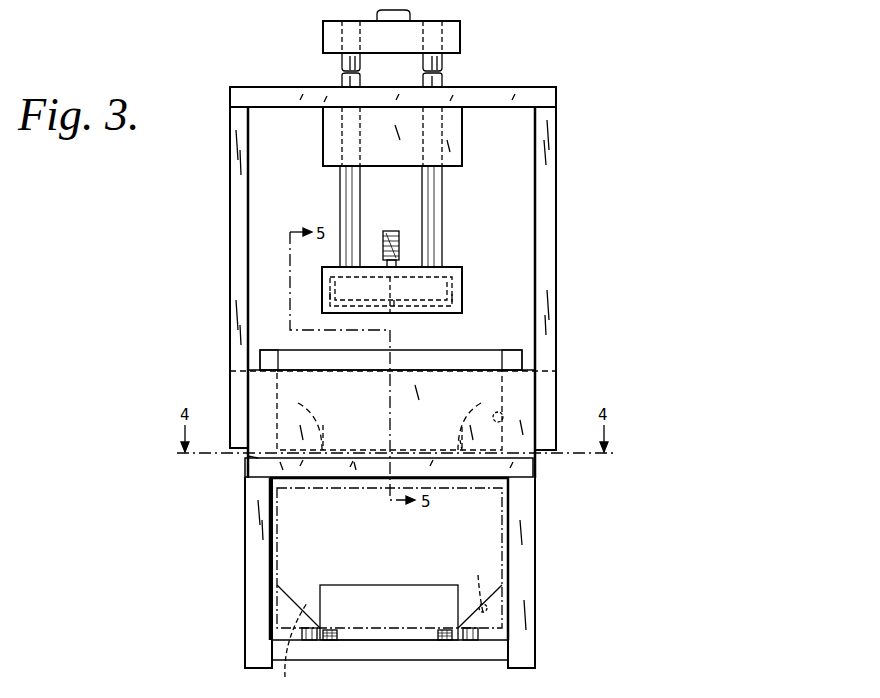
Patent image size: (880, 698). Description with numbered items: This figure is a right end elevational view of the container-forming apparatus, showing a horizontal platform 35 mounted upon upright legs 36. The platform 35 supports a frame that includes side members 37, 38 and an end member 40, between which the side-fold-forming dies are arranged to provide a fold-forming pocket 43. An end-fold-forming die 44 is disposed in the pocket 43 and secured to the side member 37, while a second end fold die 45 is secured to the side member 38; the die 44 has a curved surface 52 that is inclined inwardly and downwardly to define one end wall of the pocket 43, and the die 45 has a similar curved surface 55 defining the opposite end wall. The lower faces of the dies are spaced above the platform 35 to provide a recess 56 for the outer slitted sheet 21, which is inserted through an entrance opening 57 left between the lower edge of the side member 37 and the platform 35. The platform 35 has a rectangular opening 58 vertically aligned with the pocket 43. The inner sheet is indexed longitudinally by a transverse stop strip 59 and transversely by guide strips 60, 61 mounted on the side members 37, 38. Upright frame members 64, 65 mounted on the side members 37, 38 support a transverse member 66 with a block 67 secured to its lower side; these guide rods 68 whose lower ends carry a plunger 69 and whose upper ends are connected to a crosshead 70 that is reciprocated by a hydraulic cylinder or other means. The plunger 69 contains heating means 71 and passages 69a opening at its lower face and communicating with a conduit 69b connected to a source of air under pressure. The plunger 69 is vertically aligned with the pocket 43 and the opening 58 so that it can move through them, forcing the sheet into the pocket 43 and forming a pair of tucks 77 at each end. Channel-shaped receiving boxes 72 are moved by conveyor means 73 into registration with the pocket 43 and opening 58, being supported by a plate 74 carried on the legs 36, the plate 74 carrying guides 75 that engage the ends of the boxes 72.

The outer sheet 21 is at (495, 529).
The horizontal platform 35 is at (530, 473).
The upright legs 36 is at (265, 544).
The side member 37 is at (248, 373).
The side member 38 is at (503, 413).
The end member 40 is at (525, 384).
The fold-forming pocket 43 is at (460, 441).
The end-fold-forming die 44 is at (310, 406).
The second end fold die 45 is at (478, 404).
The curved surface 52 is at (324, 426).
The curved surface 55 is at (462, 428).
The recess 56 is at (355, 462).
The entrance opening 57 is at (247, 457).
The rectangular opening 58 is at (283, 462).
The transverse stop strip 59 is at (474, 359).
The guide strip 60 is at (270, 353).
The guide strip 61 is at (514, 353).
The upright frame member 64 is at (235, 252).
The upright frame member 65 is at (550, 252).
The transverse member 66 is at (500, 89).
The block 67 is at (462, 151).
The rods 68 is at (346, 189).
The plunger 69 is at (452, 272).
The passages 69a is at (330, 293).
The conduit 69b is at (397, 231).
The crosshead 70 is at (330, 41).
The heating means 71 is at (452, 288).
The receiving boxes 72 is at (424, 597).
The conveyor means 73 is at (337, 641).
The plate 74 is at (488, 656).
The guides 75 is at (303, 634).
The tucks 77 is at (380, 626).